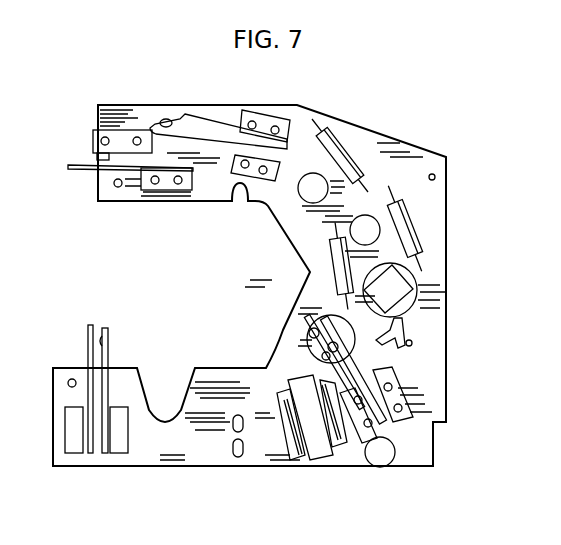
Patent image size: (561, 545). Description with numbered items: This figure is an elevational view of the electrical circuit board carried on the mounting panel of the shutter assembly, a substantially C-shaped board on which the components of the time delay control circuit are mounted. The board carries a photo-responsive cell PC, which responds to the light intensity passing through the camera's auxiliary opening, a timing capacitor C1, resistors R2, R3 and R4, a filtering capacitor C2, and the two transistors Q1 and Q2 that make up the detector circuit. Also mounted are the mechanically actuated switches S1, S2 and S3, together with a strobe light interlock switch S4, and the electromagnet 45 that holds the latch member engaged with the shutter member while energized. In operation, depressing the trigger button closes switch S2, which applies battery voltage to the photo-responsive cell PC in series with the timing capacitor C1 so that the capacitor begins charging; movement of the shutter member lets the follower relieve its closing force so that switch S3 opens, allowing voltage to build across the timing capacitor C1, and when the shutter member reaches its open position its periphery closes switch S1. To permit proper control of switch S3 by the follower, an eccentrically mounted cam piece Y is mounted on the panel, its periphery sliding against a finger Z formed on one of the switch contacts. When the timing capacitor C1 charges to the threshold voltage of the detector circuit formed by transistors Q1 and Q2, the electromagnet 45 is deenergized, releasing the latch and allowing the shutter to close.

The electromagnet 45 is at (278, 378).
The mechanically actuated switch S1 is at (204, 112).
The mechanically actuated switch S2 is at (86, 143).
The mechanically actuated switch S3 is at (380, 365).
The strobe light interlock switch S4 is at (86, 347).
The transistor Q1 is at (378, 236).
The transistor Q2 is at (308, 198).
The resistor R2 is at (349, 147).
The resistor R3 is at (330, 262).
The resistor R4 is at (419, 220).
The photo-responsive cell PC is at (410, 292).
The timing capacitor C1 is at (410, 323).
The filtering capacitor C2 is at (379, 462).
The eccentrically mounted cam piece Y is at (301, 345).
The finger Z is at (335, 300).